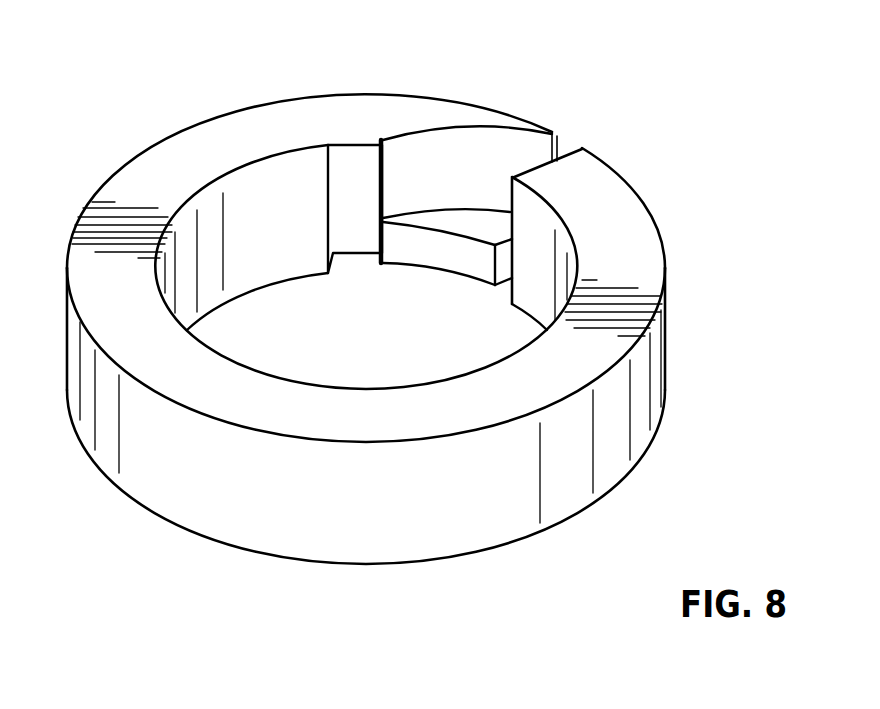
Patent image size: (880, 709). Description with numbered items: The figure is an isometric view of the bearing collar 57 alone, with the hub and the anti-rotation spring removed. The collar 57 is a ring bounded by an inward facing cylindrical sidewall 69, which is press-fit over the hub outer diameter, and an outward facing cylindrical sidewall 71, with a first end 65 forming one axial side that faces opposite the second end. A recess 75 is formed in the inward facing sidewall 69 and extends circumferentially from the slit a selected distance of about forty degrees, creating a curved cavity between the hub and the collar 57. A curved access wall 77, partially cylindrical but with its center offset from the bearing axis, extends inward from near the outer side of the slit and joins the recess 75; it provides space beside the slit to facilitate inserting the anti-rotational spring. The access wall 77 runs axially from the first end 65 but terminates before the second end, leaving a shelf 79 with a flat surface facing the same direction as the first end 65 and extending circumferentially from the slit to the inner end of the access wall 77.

The bearing collar 57 is at (666, 158).
The first end 65 is at (638, 262).
The inward facing cylindrical sidewall 69 is at (243, 296).
The outward facing cylindrical sidewall 71 is at (650, 450).
The recess 75 is at (455, 257).
The access wall 77 is at (473, 150).
The shelf 79 is at (460, 223).